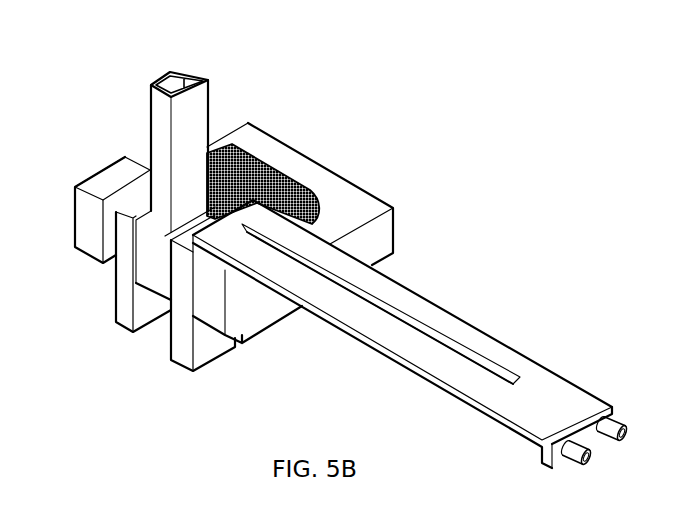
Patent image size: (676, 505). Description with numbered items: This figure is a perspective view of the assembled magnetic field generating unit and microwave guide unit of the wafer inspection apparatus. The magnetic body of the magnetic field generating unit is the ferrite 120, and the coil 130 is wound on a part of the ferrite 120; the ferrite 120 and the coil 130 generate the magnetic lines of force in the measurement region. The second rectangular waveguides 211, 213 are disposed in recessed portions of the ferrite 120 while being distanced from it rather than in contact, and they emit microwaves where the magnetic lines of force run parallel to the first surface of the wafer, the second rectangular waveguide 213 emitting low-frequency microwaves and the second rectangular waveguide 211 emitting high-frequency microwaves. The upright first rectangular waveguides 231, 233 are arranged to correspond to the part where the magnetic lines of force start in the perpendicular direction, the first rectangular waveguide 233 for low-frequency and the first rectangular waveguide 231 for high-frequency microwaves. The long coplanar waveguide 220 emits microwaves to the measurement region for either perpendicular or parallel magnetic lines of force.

The ferrite 120 is at (394, 229).
The coil 130 is at (285, 187).
The second rectangular waveguide 211 is at (123, 298).
The second rectangular waveguide 213 is at (175, 358).
The coplanar waveguide 220 is at (537, 370).
The first rectangular waveguide 231 is at (162, 76).
The first rectangular waveguide 233 is at (204, 106).